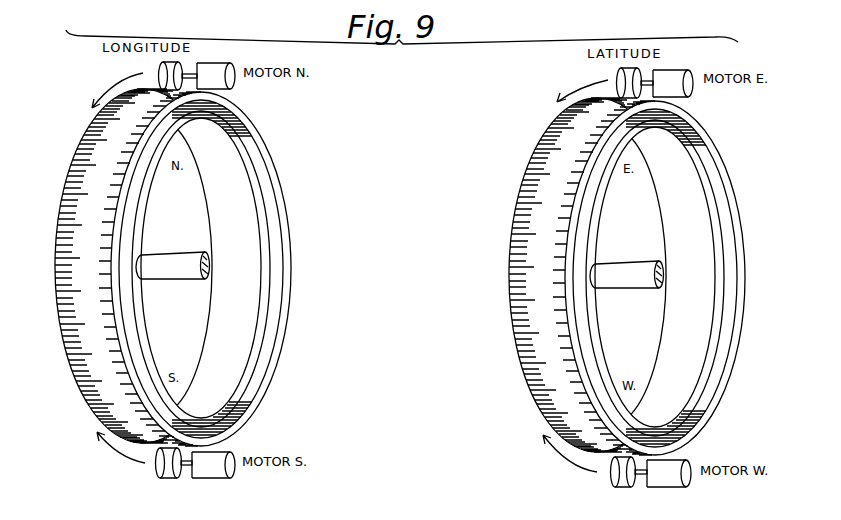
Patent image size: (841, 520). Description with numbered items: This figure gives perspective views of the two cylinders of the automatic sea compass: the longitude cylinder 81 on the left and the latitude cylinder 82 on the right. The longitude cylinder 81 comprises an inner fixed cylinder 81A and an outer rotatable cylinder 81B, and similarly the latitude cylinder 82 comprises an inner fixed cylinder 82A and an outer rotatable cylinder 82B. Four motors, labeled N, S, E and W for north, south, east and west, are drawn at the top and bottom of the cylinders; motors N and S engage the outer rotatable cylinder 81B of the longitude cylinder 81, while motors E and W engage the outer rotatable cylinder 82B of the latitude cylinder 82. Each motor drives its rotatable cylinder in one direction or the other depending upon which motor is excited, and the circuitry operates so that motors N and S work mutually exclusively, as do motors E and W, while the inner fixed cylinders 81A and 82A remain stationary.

The longitude cylinder 81 is at (147, 267).
The inner fixed cylinder 81A is at (148, 340).
The outer rotatable cylinder 81B is at (72, 172).
The latitude cylinder 82 is at (602, 276).
The inner fixed cylinder 82A is at (598, 278).
The outer rotatable cylinder 82B is at (560, 276).